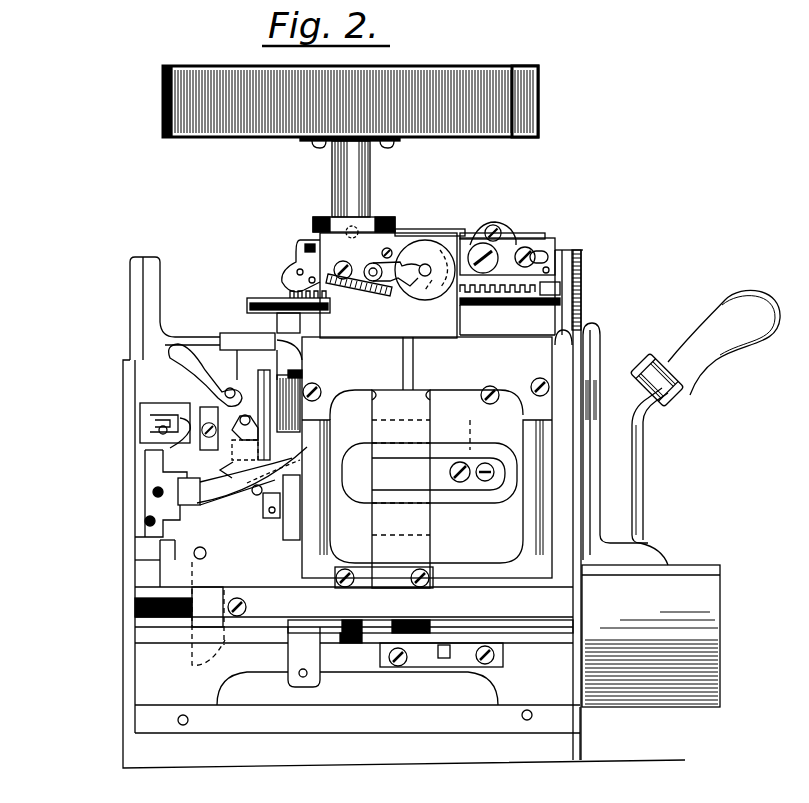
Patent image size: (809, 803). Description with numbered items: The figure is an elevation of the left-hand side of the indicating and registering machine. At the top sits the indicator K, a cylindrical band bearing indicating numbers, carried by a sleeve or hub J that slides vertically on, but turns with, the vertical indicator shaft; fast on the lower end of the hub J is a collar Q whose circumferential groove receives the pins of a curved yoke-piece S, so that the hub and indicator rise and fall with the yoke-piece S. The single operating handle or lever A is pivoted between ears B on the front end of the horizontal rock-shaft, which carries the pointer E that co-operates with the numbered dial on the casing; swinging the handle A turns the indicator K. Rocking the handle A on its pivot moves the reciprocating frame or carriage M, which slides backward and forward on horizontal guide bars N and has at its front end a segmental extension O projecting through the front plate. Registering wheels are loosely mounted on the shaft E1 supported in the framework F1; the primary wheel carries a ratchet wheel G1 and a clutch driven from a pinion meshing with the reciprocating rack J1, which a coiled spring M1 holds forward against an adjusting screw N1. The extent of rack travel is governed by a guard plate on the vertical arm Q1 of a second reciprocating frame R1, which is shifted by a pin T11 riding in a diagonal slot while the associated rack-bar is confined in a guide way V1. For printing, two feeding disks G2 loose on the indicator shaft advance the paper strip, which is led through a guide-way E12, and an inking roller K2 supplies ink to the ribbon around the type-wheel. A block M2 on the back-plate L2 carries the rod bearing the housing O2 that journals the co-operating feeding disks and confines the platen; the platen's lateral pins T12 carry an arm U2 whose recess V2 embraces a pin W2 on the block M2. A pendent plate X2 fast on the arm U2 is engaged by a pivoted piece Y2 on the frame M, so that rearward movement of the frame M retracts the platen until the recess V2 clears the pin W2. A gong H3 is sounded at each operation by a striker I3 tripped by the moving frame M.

The indicator K is at (540, 118).
The sleeve or hub J is at (373, 190).
The collar Q is at (318, 228).
The curved yoke-piece S is at (395, 228).
The ratchet wheel G1 is at (448, 226).
The framework F1 is at (369, 285).
The shaft E1 is at (442, 256).
The reciprocating rack-bar J1 is at (262, 305).
The coiled spring M1 is at (507, 278).
The adjusting screw N1 is at (583, 288).
The pointer E is at (602, 365).
The operating handle or lever A is at (643, 470).
The ears B is at (648, 555).
The segmental extension O is at (716, 602).
The vertical arm Q1 is at (427, 462).
The feeding disks G2 is at (303, 375).
The inking roller K2 is at (300, 412).
The guide-way E12 is at (266, 378).
The pendent plate X2 is at (209, 420).
The arm U2 is at (241, 427).
The pins T12 is at (258, 458).
The housing O2 is at (233, 468).
The block M2 is at (145, 422).
The pin W2 is at (163, 434).
The recess V2 is at (180, 442).
The back-plate L2 is at (138, 473).
The pivoted piece Y2 is at (252, 483).
The reciprocating frame or carriage M is at (270, 514).
The striker I3 is at (206, 553).
The gong H3 is at (219, 607).
The horizontal guide bars N is at (220, 613).
The reciprocating frame R1 is at (360, 637).
The pin T11 is at (442, 658).
The guide way V1 is at (456, 658).